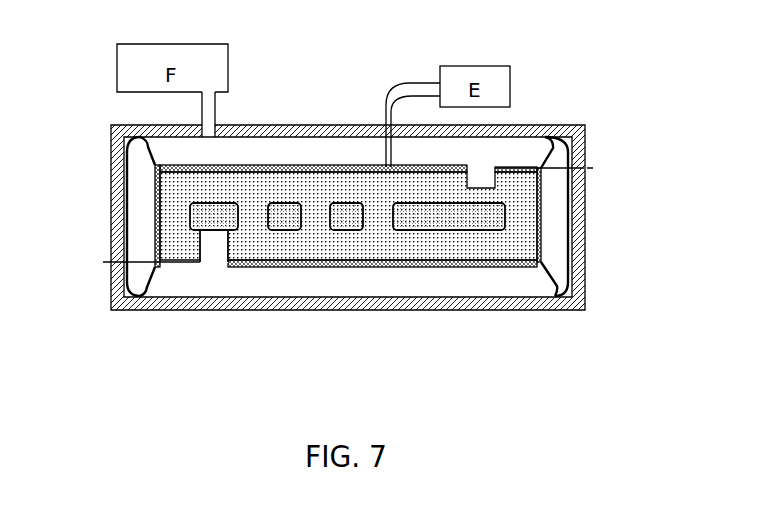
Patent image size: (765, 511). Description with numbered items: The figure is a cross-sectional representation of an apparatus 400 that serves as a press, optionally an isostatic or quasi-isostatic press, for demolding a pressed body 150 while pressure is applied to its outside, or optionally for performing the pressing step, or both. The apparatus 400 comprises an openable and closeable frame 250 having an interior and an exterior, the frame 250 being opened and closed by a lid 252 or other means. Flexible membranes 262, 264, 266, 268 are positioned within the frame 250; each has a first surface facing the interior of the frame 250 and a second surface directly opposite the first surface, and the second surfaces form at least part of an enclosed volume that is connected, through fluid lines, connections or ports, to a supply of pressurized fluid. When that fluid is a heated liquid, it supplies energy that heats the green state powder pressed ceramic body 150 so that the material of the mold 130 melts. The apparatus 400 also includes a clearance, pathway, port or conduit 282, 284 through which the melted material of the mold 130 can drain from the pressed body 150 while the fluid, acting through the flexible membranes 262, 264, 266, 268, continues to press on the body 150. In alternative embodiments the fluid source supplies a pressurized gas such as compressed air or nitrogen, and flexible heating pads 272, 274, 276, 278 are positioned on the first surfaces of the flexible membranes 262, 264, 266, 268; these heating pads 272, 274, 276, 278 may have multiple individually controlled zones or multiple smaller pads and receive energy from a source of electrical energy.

The mold 130 is at (465, 218).
The pressed body 150 is at (172, 190).
The frame 250 is at (118, 227).
The lid 252 is at (130, 132).
The flexible membrane 262 is at (305, 286).
The flexible membrane 264 is at (273, 152).
The flexible membrane 266 is at (137, 172).
The flexible membrane 268 is at (560, 193).
The flexible heating pad 272 is at (358, 267).
The flexible heating pad 274 is at (330, 168).
The flexible heating pad 276 is at (157, 240).
The flexible heating pad 278 is at (538, 233).
The conduit 282 is at (105, 265).
The conduit 284 is at (595, 165).
The apparatus 400 is at (189, 410).